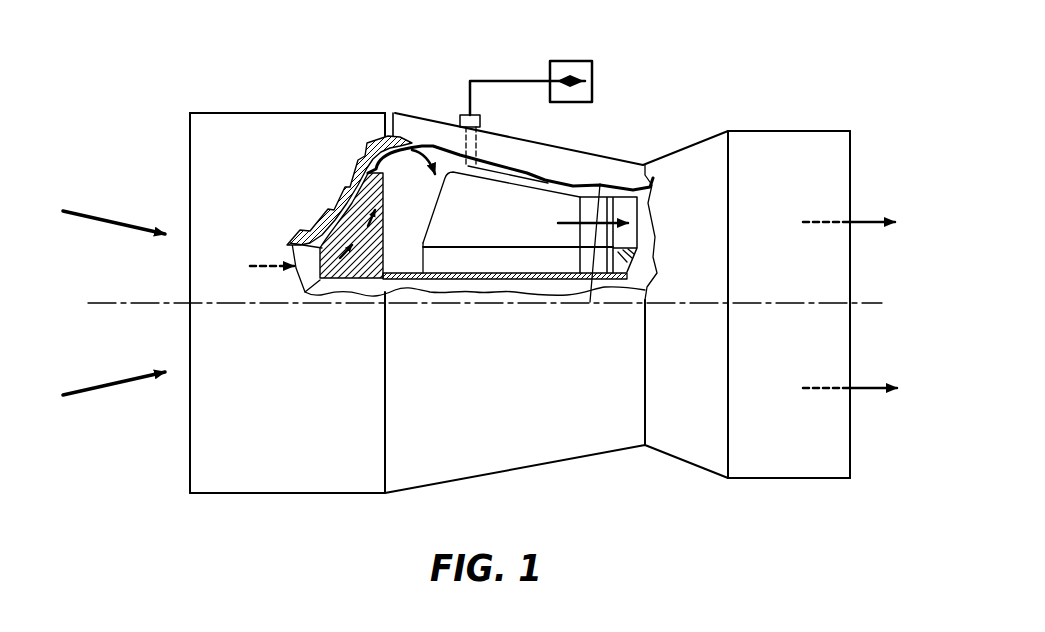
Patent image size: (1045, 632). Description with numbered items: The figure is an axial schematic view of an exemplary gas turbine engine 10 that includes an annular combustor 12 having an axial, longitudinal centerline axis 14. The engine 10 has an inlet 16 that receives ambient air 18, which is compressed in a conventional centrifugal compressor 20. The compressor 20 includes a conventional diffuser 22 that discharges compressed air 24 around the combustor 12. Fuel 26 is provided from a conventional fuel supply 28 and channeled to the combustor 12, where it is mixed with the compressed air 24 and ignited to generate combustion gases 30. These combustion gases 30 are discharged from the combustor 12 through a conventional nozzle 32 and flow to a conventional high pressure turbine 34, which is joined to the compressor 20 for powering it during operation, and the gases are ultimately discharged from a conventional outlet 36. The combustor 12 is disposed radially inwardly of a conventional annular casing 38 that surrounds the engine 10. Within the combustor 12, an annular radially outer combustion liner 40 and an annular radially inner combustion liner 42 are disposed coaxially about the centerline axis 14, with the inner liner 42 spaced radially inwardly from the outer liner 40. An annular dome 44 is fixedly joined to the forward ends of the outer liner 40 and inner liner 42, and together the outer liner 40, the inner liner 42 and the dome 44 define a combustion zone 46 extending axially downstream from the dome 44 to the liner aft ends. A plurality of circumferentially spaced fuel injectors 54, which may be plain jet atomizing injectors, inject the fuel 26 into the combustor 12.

The gas turbine engine 10 is at (761, 128).
The annular combustor 12 is at (545, 181).
The centerline axis 14 is at (755, 306).
The inlet 16 is at (188, 112).
The ambient air 18 is at (97, 215).
The centrifugal compressor 20 is at (340, 272).
The diffuser 22 is at (390, 113).
The compressed air 24 is at (418, 146).
The fuel 26 is at (567, 76).
The fuel supply 28 is at (593, 72).
The combustion gases 30 is at (866, 221).
The nozzle 32 is at (602, 183).
The high pressure turbine 34 is at (653, 212).
The outlet 36 is at (851, 133).
The annular casing 38 is at (299, 113).
The outer combustion liner 40 is at (524, 186).
The inner combustion liner 42 is at (500, 248).
The dome 44 is at (430, 226).
The combustion zone 46 is at (490, 229).
The fuel injectors 54 is at (486, 165).